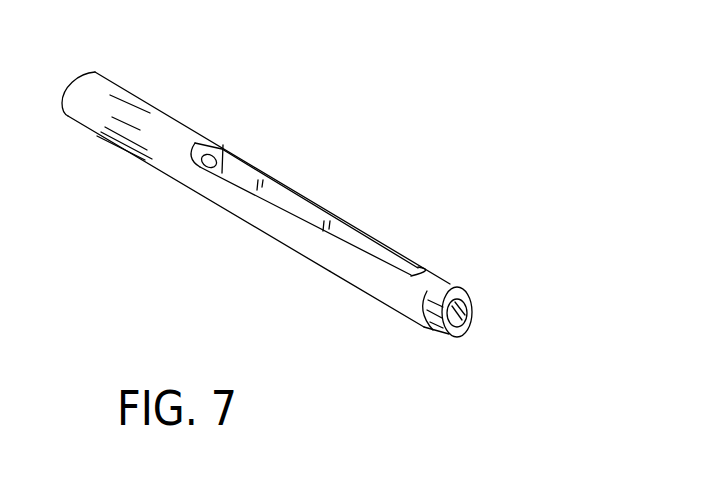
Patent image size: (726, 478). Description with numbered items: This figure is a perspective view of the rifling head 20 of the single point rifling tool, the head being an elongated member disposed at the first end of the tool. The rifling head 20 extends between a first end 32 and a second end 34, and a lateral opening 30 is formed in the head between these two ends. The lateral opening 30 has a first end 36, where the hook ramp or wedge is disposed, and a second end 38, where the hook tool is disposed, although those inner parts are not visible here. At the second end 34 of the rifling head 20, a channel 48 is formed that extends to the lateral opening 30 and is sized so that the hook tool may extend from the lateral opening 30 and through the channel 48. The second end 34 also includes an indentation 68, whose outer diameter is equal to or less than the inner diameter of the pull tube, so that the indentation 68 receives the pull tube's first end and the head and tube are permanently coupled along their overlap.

The rifling head 20 is at (150, 120).
The first end of the rifling head 32 is at (66, 90).
The lateral opening 30 is at (284, 198).
The first end of the lateral opening 36 is at (223, 152).
The second end of the lateral opening 38 is at (403, 270).
The second end of the rifling head 34 is at (402, 316).
The indentation 68 is at (445, 290).
The channel 48 is at (473, 312).